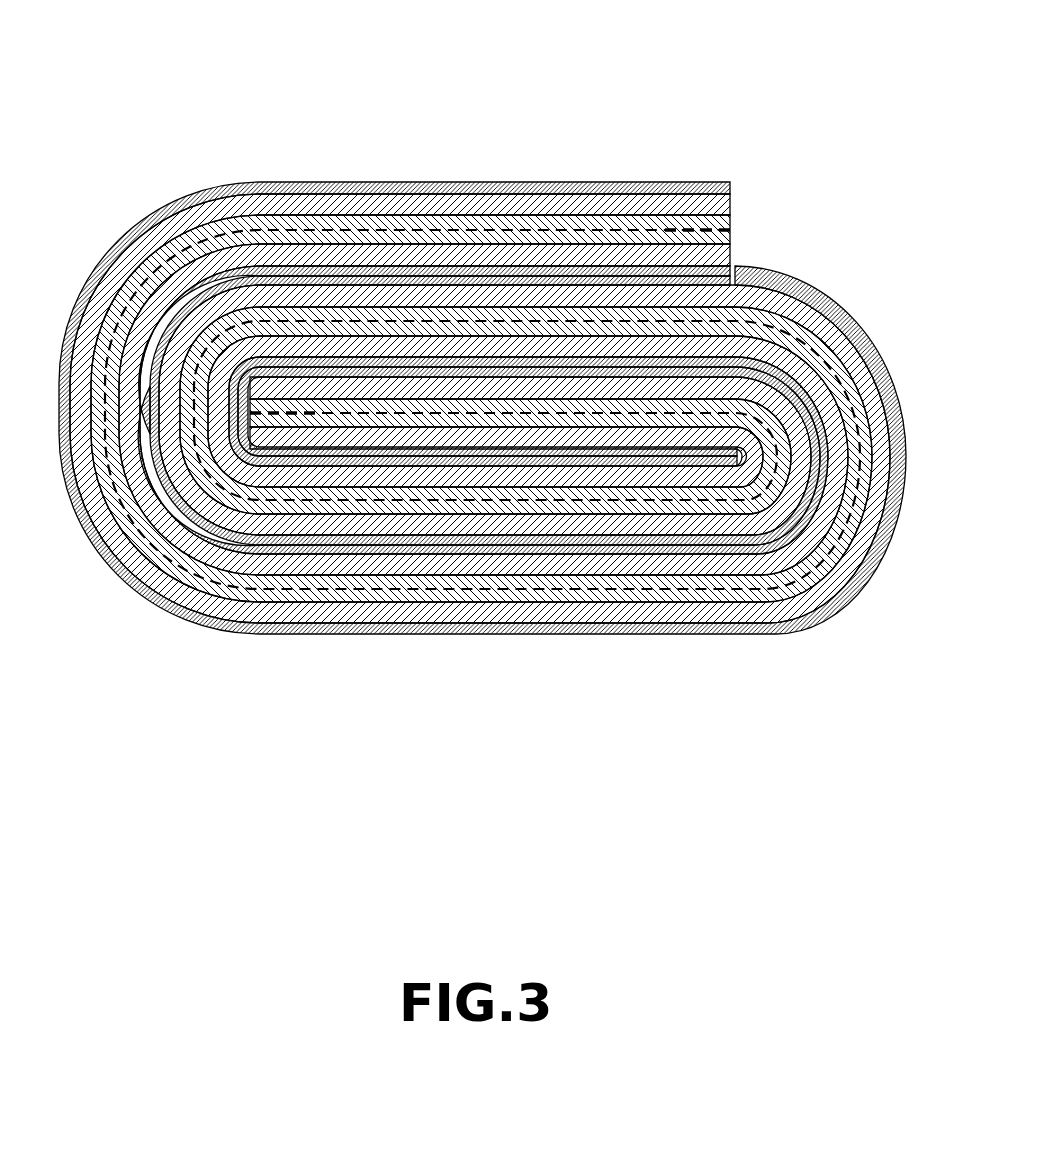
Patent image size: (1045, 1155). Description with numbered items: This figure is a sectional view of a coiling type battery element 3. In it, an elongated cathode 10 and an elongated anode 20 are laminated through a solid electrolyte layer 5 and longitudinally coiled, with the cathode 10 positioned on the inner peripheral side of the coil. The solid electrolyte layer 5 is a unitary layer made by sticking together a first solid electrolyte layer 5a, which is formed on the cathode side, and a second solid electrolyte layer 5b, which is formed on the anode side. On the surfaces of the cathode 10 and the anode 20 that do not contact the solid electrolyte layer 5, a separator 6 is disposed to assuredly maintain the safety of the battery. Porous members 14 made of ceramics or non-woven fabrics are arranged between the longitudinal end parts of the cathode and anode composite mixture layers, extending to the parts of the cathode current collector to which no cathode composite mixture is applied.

The battery element 3 is at (490, 422).
The solid electrolyte layer 5 is at (480, 491).
The first solid electrolyte layer 5a is at (483, 590).
The second solid electrolyte layer 5b is at (512, 735).
The separator 6 is at (883, 382).
The cathode 10 is at (672, 569).
The porous members 14 is at (283, 410).
The anode 20 is at (231, 642).